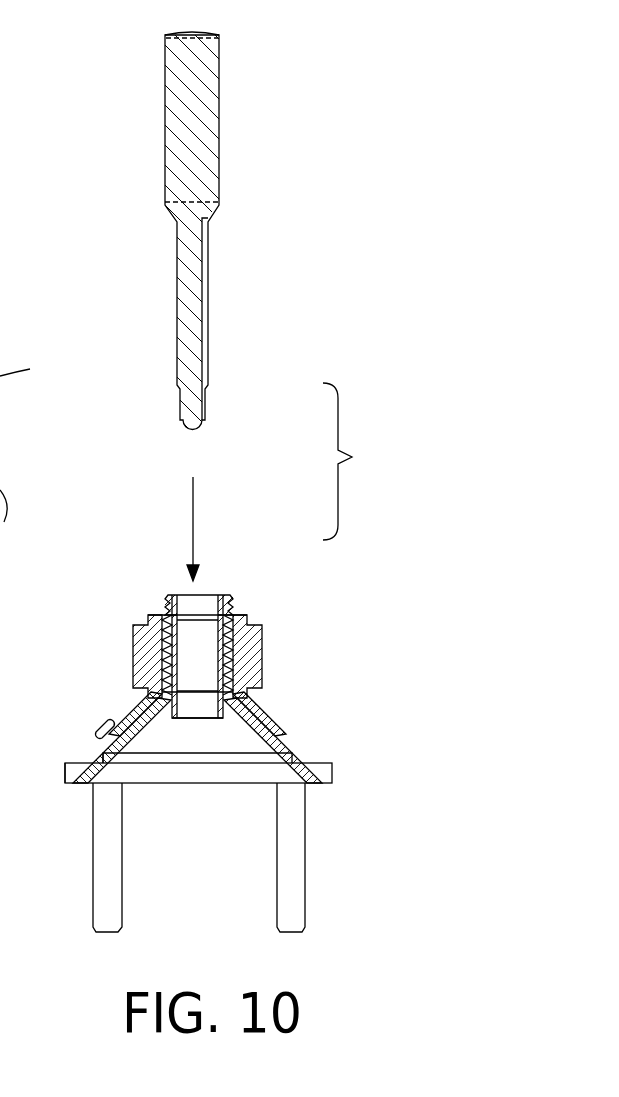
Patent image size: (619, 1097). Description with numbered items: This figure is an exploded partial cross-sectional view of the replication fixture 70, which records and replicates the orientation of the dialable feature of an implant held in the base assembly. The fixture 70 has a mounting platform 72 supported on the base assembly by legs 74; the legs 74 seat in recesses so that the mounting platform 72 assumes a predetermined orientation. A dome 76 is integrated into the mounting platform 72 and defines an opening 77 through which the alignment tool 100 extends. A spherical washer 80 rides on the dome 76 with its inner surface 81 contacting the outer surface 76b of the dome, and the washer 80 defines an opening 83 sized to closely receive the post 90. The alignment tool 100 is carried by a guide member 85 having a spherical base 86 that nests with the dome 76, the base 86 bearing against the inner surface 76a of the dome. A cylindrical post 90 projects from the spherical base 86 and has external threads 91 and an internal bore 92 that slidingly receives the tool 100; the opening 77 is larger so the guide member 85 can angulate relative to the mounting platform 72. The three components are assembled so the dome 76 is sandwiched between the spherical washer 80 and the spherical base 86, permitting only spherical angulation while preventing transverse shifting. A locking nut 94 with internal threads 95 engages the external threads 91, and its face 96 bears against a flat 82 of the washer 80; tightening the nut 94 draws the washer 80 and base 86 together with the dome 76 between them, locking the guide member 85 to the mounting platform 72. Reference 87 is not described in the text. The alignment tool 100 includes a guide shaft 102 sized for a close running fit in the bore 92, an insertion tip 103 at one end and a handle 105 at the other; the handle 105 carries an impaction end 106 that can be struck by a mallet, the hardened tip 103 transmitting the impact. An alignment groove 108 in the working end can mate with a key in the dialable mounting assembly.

The replication fixture 70 is at (191, 449).
The mounting platform 72 is at (322, 786).
The legs 74 is at (110, 898).
The dome 76 is at (310, 752).
The inner surface of the dome 76a is at (103, 766).
The outer surface of the dome 76b is at (97, 748).
The opening 77 is at (270, 713).
The spherical washer 80 is at (128, 717).
The inner surface 81 is at (122, 721).
The flat 82 is at (151, 695).
The opening 83 is at (167, 700).
The guide member 85 is at (122, 742).
The spherical base 86 is at (260, 740).
The right lower arm 87 is at (290, 733).
The cylindrical post 90 is at (222, 594).
The external threads 91 is at (167, 603).
The internal bore 92 is at (182, 700).
The locking nut 94 is at (258, 662).
The internal threads 95 is at (233, 640).
The face 96 is at (253, 695).
The alignment tool 100 is at (218, 203).
The guide shaft 102 is at (183, 313).
The insertion tip 103 is at (180, 418).
The handle 105 is at (207, 79).
The impaction end 106 is at (195, 33).
The alignment groove 108 is at (203, 348).